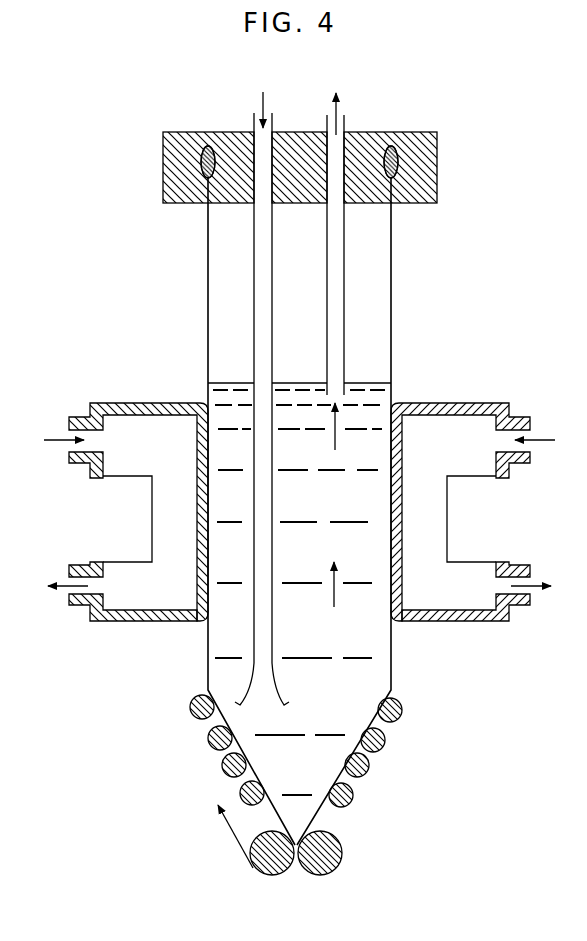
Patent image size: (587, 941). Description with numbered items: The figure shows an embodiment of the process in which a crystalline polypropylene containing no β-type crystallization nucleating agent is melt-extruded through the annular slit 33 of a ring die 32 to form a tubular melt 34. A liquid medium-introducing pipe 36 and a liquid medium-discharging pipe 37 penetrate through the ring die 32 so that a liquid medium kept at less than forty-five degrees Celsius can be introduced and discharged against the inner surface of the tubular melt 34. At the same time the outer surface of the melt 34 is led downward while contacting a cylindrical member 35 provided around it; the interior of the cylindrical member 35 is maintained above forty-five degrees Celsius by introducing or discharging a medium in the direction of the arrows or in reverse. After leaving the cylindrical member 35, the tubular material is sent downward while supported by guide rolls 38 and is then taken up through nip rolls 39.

The ring die 32 is at (428, 190).
The annular slit 33 is at (402, 204).
The tubular melt 34 is at (391, 350).
The cylindrical member 35 is at (448, 407).
The liquid medium-introducing pipe 36 is at (254, 125).
The liquid medium-discharging pipe 37 is at (345, 124).
The guide rolls 38 is at (383, 742).
The nip rolls 39 is at (301, 865).